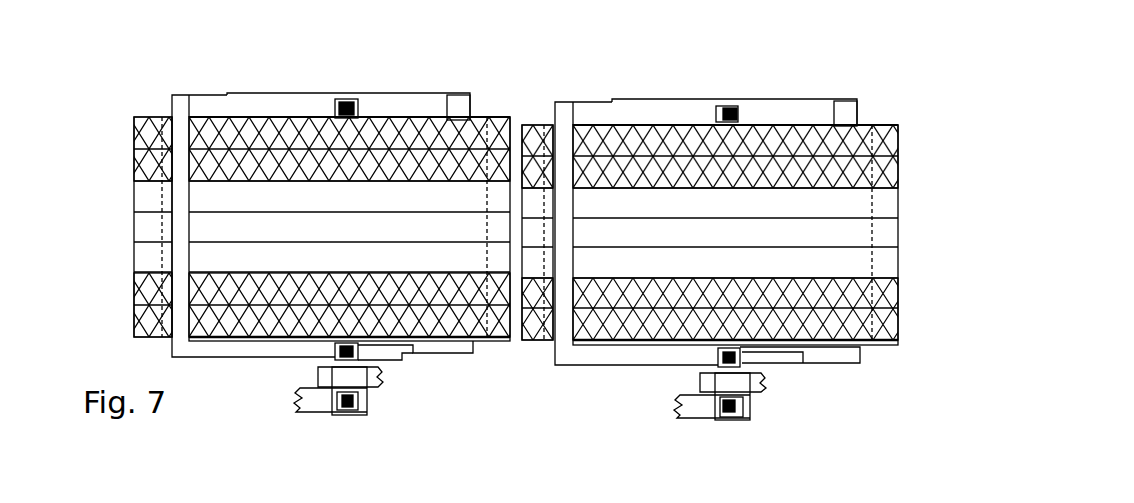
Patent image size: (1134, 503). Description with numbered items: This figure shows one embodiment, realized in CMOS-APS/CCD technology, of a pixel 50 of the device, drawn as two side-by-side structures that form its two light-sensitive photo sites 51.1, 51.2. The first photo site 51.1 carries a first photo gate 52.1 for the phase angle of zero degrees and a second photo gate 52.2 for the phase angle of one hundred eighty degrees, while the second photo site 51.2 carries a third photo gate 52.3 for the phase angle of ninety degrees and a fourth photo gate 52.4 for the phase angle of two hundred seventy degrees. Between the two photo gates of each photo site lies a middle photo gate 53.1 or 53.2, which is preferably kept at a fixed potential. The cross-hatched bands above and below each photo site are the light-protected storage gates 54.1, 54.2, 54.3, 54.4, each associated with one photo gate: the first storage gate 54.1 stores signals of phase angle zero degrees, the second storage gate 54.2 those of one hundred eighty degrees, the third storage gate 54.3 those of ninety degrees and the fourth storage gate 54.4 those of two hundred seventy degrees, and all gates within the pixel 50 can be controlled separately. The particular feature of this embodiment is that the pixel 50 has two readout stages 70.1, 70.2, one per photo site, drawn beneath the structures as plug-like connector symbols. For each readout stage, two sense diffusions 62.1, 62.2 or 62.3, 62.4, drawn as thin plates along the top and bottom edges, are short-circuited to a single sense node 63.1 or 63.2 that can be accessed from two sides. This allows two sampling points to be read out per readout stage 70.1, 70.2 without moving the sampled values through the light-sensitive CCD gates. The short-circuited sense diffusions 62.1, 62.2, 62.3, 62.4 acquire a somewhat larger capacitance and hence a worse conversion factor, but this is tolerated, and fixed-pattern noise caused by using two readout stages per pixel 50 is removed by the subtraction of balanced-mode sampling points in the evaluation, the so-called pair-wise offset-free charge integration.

The pixel 50 is at (418, 52).
The first photo site 51.1 is at (754, 246).
The second photo site 51.2 is at (347, 241).
The first photo gate 52.1 is at (590, 197).
The second photo gate 52.2 is at (600, 260).
The third photo gate 52.3 is at (210, 192).
The fourth photo gate 52.4 is at (218, 255).
The middle photo gate 53.1 is at (660, 233).
The middle photo gate 53.2 is at (277, 228).
The first storage gate 54.1 is at (817, 173).
The second storage gate 54.2 is at (823, 296).
The third storage gate 54.3 is at (457, 167).
The fourth storage gate 54.4 is at (463, 288).
The sense diffusion 62.1 is at (847, 117).
The sense diffusion 62.2 is at (848, 352).
The sense diffusion 62.3 is at (463, 108).
The sense diffusion 62.4 is at (475, 345).
The sense node 63.1 is at (718, 363).
The sense node 63.2 is at (336, 356).
The readout stage 70.1 is at (757, 418).
The readout stage 70.2 is at (385, 415).